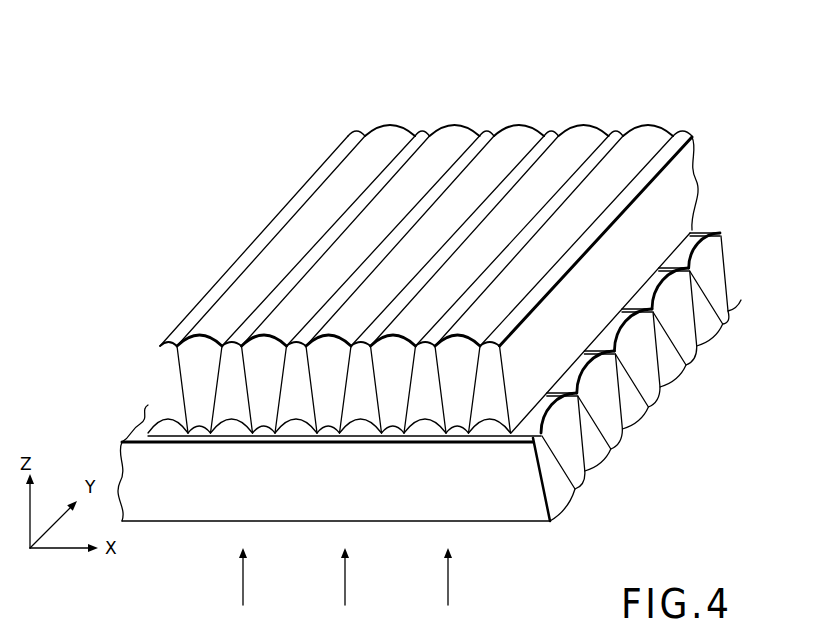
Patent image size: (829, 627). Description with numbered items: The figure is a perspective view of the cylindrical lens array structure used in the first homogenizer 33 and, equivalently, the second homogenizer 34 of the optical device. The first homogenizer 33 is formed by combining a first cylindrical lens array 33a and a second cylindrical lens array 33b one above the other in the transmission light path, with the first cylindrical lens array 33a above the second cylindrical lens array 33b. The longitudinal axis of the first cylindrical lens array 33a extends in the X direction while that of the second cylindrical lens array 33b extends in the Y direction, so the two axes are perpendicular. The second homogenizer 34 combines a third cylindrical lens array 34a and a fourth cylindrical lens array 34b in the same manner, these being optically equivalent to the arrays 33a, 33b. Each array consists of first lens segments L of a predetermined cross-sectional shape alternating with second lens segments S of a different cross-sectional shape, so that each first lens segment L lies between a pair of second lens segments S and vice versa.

The first homogenizer 33 is at (463, 277).
The second homogenizer 34 is at (247, 105).
The first cylindrical lens array 33a is at (463, 380).
The third cylindrical lens array 34a is at (805, 294).
The second cylindrical lens array 33b is at (446, 274).
The fourth cylindrical lens array 34b is at (705, 73).
The first lens segment L is at (395, 131).
The second lens segment S is at (355, 134).